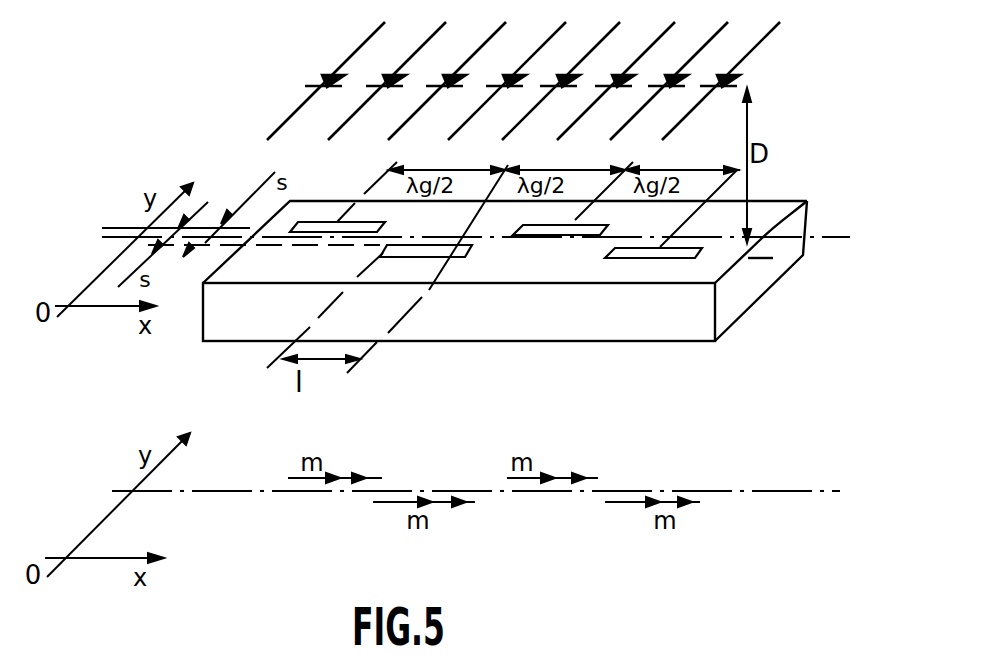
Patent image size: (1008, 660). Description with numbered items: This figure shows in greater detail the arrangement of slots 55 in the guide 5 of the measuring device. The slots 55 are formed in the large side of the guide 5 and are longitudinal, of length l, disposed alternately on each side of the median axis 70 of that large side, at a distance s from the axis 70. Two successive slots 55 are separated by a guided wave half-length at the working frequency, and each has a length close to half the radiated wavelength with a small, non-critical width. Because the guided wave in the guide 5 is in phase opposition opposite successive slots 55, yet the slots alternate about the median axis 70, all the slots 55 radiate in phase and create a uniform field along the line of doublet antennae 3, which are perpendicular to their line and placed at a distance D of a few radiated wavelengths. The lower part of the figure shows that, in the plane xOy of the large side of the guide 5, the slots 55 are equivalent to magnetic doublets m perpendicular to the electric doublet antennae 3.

The doublet antennae 3 is at (633, 58).
The guide 5 is at (768, 213).
The slots 55 is at (542, 237).
The median axis 70 is at (819, 253).